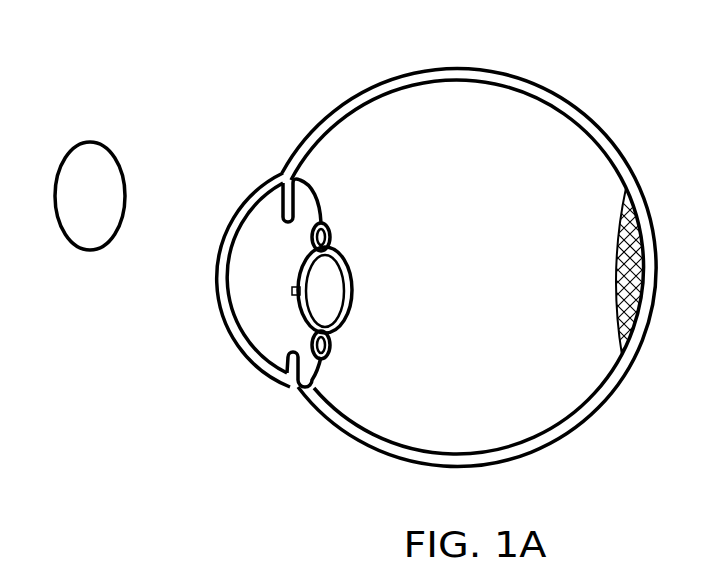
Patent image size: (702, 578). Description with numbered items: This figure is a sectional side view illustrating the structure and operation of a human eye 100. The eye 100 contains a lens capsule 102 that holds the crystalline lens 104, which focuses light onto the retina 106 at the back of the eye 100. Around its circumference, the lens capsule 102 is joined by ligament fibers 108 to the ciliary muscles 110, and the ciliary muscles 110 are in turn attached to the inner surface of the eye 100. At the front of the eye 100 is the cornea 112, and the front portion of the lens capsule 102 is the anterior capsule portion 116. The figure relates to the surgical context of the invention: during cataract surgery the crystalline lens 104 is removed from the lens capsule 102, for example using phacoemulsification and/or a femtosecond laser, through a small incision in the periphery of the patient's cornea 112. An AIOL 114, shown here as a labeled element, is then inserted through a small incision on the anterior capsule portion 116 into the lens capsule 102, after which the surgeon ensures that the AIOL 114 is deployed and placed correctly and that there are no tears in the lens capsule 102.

The eye 100 is at (470, 68).
The lens capsule 102 is at (345, 262).
The crystalline lens 104 is at (330, 290).
The retina 106 is at (620, 193).
The ligament fibers 108 is at (332, 237).
The ciliary muscles 110 is at (320, 182).
The cornea 112 is at (242, 344).
The AIOL 114 is at (88, 250).
The anterior capsule portion 116 is at (291, 290).